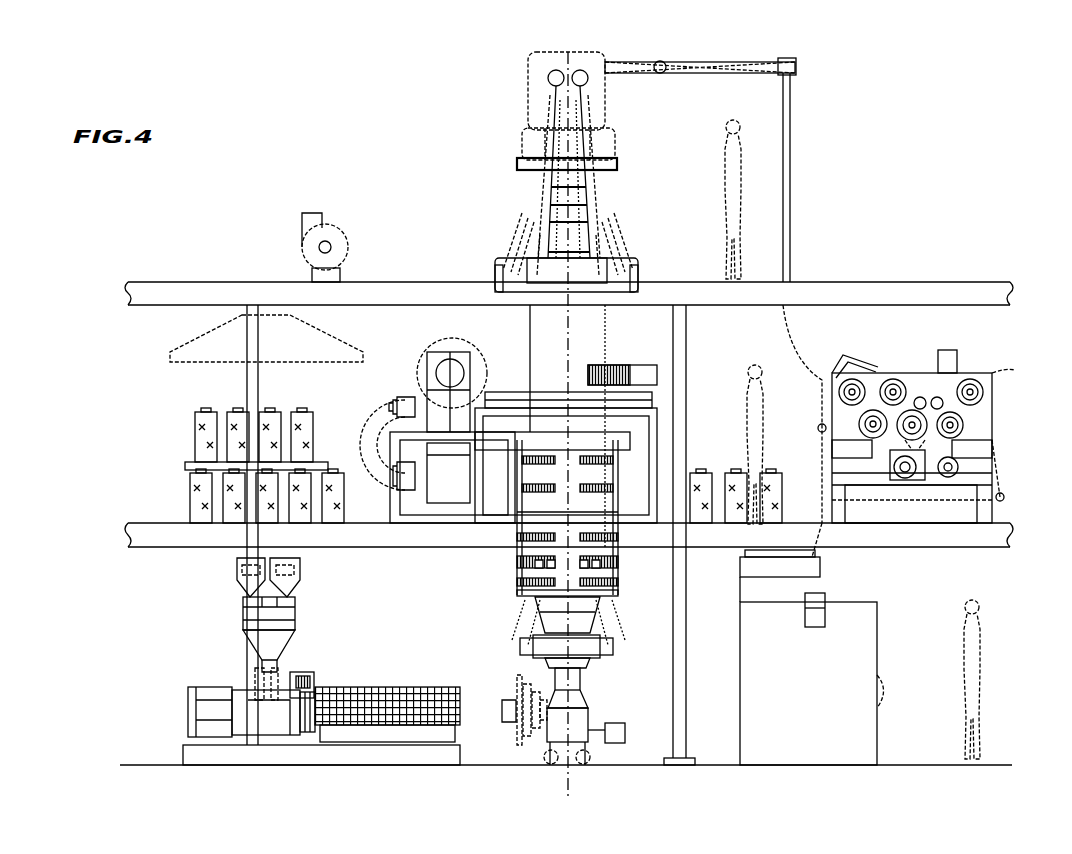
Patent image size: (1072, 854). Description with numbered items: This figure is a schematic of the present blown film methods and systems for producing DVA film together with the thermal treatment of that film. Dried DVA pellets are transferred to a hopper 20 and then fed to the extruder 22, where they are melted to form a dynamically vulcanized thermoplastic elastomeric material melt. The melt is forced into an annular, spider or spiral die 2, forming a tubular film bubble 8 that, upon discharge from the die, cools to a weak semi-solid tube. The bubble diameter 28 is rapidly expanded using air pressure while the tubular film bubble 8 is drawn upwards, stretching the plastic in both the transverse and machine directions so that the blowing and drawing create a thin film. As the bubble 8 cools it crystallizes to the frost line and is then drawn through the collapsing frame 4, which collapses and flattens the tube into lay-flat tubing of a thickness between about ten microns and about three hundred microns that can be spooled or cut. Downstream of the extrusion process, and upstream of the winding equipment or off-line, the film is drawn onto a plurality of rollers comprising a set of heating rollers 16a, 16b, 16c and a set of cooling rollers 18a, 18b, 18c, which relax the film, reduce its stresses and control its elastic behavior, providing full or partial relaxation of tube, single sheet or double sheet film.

The die 2 is at (545, 730).
The collapsing frame 4 is at (522, 142).
The tubular film bubble 8 is at (605, 332).
The heating roller 16a is at (905, 378).
The heating roller 16b is at (873, 410).
The heating roller 16c is at (820, 380).
The cooling roller 18a is at (990, 375).
The cooling roller 18b is at (992, 440).
The cooling roller 18c is at (930, 470).
The hopper 20 is at (290, 647).
The extruder 22 is at (205, 688).
The bubble diameter 28 is at (880, 630).